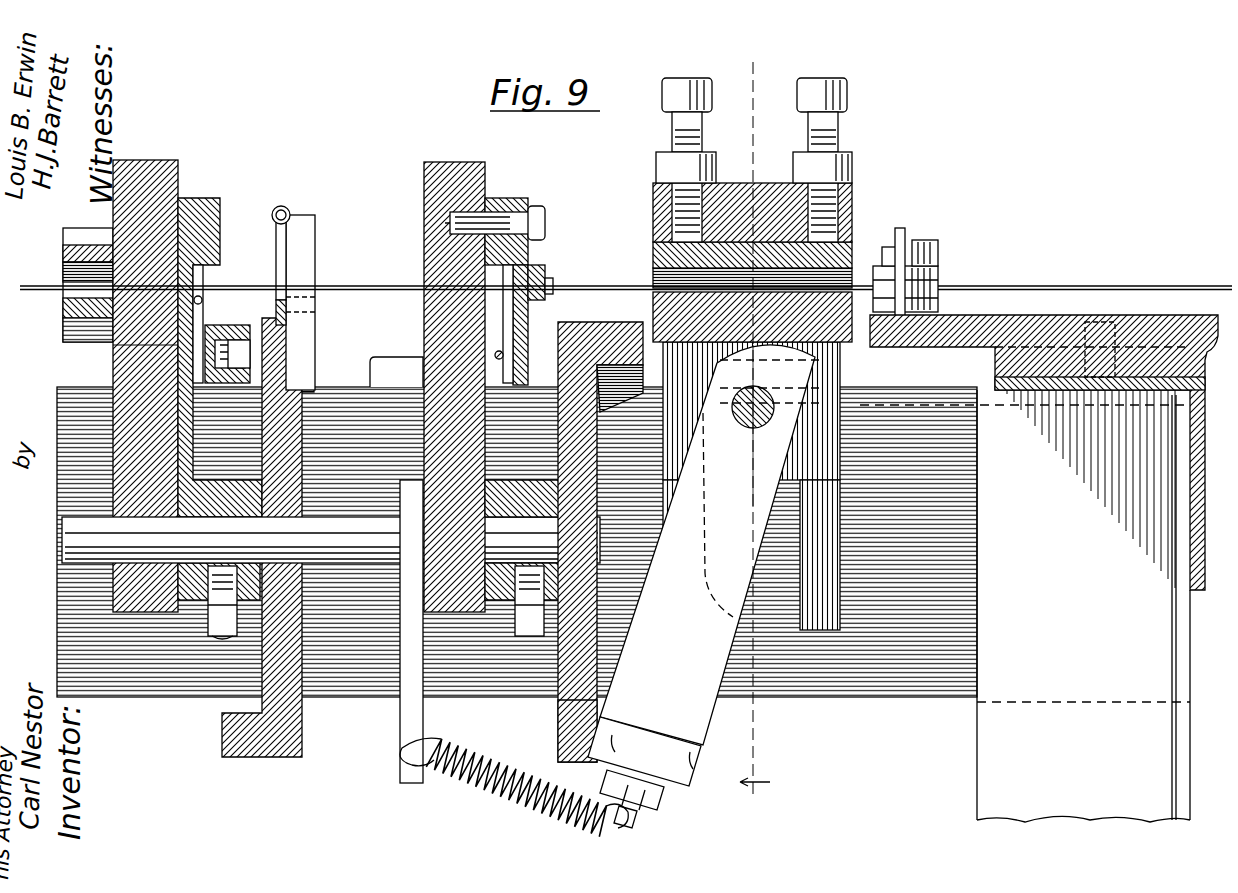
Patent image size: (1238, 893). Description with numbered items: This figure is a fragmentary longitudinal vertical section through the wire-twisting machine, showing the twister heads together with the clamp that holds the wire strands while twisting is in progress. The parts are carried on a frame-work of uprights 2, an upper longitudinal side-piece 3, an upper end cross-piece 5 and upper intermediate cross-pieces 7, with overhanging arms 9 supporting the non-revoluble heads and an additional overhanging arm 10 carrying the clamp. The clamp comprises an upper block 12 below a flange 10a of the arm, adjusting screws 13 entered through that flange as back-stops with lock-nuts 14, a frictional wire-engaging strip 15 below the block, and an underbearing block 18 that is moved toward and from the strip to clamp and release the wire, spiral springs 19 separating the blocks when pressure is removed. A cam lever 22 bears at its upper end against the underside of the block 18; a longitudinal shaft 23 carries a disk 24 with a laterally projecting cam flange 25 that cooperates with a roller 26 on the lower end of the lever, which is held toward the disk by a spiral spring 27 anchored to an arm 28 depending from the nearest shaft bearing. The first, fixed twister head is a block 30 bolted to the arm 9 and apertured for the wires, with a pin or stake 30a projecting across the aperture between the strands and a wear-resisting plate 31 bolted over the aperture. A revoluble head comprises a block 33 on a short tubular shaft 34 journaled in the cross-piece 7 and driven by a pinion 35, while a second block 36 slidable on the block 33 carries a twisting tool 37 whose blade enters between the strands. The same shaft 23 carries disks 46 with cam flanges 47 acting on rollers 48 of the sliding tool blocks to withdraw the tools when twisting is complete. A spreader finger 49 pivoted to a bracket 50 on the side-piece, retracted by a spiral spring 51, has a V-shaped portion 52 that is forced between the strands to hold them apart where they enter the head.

The uprights 2 is at (1025, 606).
The upper longitudinal side-piece 3 is at (517, 527).
The upper end cross-piece 5 is at (1192, 515).
The upper intermediate cross-piece 7 is at (152, 160).
The overhanging arm 9 is at (428, 164).
The overhanging arm 10 is at (760, 78).
The flange 10a is at (852, 203).
The upper block 12 is at (852, 256).
The adjusting screws 13 is at (828, 150).
The lock-nuts 14 is at (888, 172).
The wire-engaging block or strip 15 is at (900, 245).
The underbearing block 18 is at (658, 302).
The spiral springs 19 is at (938, 262).
The cam lever 22 is at (711, 545).
The longitudinal shaft 23 is at (362, 565).
The disk 24 is at (558, 742).
The cam flange 25 is at (610, 345).
The roller 26 is at (700, 750).
The spiral spring 27 is at (514, 787).
The arm 28 is at (398, 770).
The block 30 is at (522, 202).
The pin or stake 30a is at (530, 330).
The plate 31 is at (542, 268).
The block 33 is at (222, 207).
The tubular shaft 34 is at (205, 272).
The pinion 35 is at (63, 256).
The second block 36 is at (115, 352).
The twisting tool 37 is at (216, 385).
The disks 46 is at (300, 392).
The cam flanges 47 is at (224, 757).
The rollers 48 is at (250, 368).
The finger 49 is at (284, 250).
The bracket 50 is at (300, 265).
The spiral spring 51 is at (282, 206).
The V-shaped portion 52 is at (292, 290).